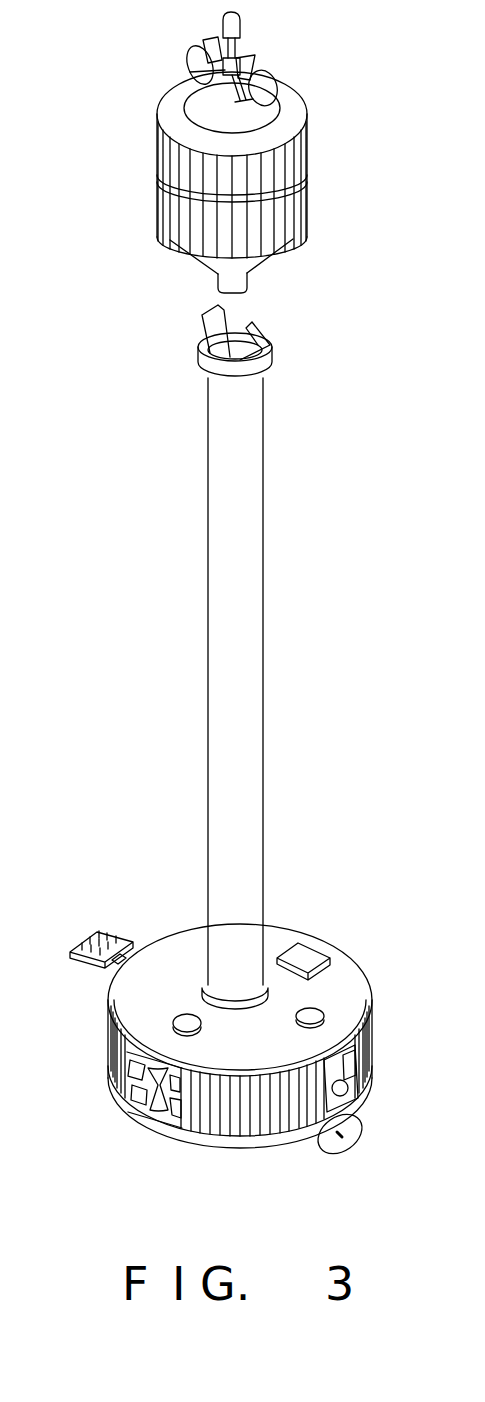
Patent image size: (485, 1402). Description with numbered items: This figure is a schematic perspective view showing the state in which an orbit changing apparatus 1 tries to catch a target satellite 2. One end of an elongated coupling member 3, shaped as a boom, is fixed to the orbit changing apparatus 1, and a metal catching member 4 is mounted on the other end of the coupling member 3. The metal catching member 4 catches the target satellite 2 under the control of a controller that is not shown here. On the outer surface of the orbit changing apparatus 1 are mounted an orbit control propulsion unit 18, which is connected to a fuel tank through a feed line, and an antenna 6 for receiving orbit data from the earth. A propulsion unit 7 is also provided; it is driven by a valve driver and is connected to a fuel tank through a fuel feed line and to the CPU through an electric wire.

The orbit changing apparatus 1 is at (318, 925).
The target satellite 2 is at (290, 115).
The coupling member 3 is at (263, 600).
The metal catching member 4 is at (268, 332).
The antenna 6 is at (320, 1152).
The propulsion unit 7 is at (356, 1078).
The orbit control propulsion unit 18 is at (178, 1115).